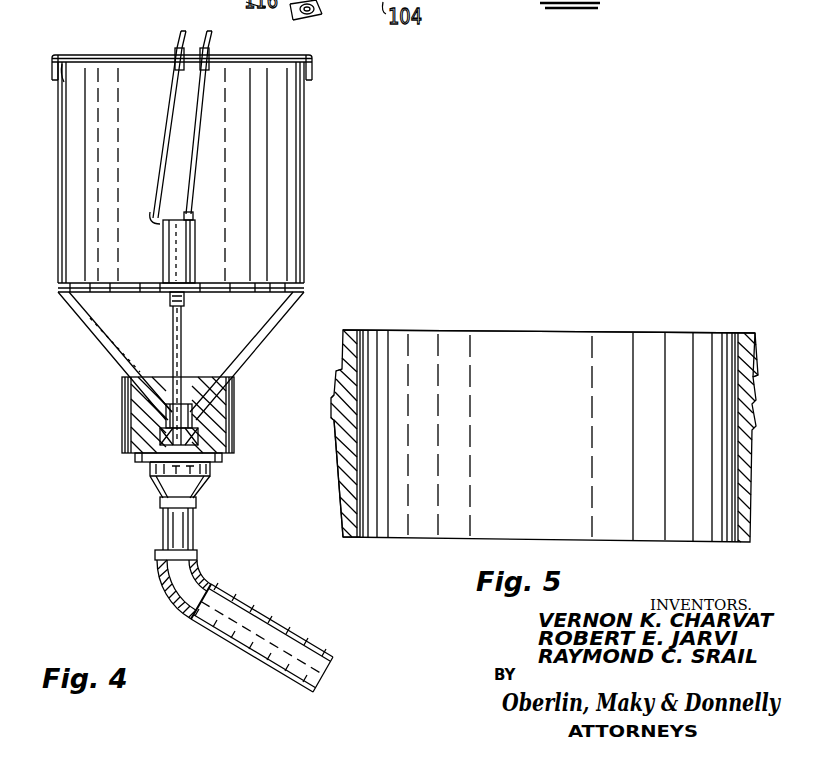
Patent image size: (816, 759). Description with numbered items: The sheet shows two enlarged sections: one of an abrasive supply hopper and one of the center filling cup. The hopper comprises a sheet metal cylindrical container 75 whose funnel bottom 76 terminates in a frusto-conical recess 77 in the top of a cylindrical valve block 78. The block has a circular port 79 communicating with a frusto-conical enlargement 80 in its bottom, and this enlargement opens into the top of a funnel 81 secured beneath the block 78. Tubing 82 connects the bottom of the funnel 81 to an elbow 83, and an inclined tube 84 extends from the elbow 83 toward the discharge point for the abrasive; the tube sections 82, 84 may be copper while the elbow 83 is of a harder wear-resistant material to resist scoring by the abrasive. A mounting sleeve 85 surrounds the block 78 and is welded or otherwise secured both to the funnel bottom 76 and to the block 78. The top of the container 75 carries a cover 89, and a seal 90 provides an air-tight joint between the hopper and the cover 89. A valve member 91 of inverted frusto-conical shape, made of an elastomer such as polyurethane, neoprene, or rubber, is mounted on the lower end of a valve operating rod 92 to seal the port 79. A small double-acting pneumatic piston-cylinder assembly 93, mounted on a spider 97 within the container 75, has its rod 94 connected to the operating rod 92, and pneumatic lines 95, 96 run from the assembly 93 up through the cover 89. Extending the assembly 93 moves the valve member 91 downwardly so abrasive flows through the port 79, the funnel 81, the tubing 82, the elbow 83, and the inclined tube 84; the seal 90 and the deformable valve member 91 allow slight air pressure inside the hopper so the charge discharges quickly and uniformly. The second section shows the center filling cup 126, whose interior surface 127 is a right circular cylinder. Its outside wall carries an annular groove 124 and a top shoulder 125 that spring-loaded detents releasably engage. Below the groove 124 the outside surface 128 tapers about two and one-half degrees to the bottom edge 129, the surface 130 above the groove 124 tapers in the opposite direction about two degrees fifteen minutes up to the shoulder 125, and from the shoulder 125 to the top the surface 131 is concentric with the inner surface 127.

In FIG. 4, the cylindrical container 75 is at (304, 190).
In FIG. 4, the funnel bottom 76 is at (255, 344).
In FIG. 4, the frusto-conical recess 77 is at (190, 404).
In FIG. 4, the valve block 78 is at (224, 460).
In FIG. 4, the circular port 79 is at (168, 410).
In FIG. 4, the frusto-conical enlargement 80 is at (150, 478).
In FIG. 4, the funnel 81 is at (207, 490).
In FIG. 4, the tubing 82 is at (196, 527).
In FIG. 4, the elbow 83 is at (205, 578).
In FIG. 4, the inclined tube 84 is at (280, 624).
In FIG. 4, the mounting sleeve 85 is at (228, 404).
In FIG. 4, the cover 89 is at (101, 55).
In FIG. 4, the seal 90 is at (66, 72).
In FIG. 4, the valve member 91 is at (200, 428).
In FIG. 4, the valve operating rod 92 is at (184, 330).
In FIG. 4, the pneumatic piston-cylinder assembly 93 is at (197, 238).
In FIG. 4, the rod 94 is at (186, 300).
In FIG. 4, the pneumatic line 95 is at (161, 150).
In FIG. 4, the pneumatic line 96 is at (198, 171).
In FIG. 4, the spider 97 is at (247, 283).
In FIG. 5, the annular groove 124 is at (334, 420).
In FIG. 5, the top shoulder 125 is at (340, 370).
In FIG. 5, the center filling cup 126 is at (618, 334).
In FIG. 5, the interior surface 127 is at (398, 528).
In FIG. 5, the tapered outside surface 128 is at (340, 490).
In FIG. 5, the bottom edge 129 is at (344, 538).
In FIG. 5, the surface above the groove 130 is at (334, 398).
In FIG. 5, the upper surface 131 is at (758, 370).